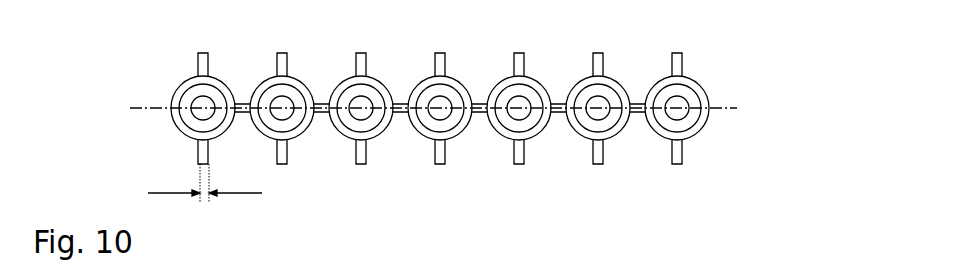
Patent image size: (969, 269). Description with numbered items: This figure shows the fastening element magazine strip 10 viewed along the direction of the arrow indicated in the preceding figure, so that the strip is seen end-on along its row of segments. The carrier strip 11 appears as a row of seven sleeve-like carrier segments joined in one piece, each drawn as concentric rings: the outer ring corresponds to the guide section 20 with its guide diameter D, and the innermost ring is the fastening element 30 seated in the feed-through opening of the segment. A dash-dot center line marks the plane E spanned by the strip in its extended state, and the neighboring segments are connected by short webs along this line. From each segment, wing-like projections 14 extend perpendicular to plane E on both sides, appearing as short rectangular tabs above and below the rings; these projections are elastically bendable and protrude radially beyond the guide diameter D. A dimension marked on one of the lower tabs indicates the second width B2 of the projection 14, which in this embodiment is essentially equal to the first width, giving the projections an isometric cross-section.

The fastening element magazine strip 10 is at (138, 55).
The carrier strip 11 is at (630, 181).
The projections 14 is at (498, 38).
The guide section 20 is at (721, 70).
The fastening element 30 is at (720, 143).
The plane E is at (727, 109).
The second width B2 is at (230, 193).
The guide diameter D is at (377, 259).